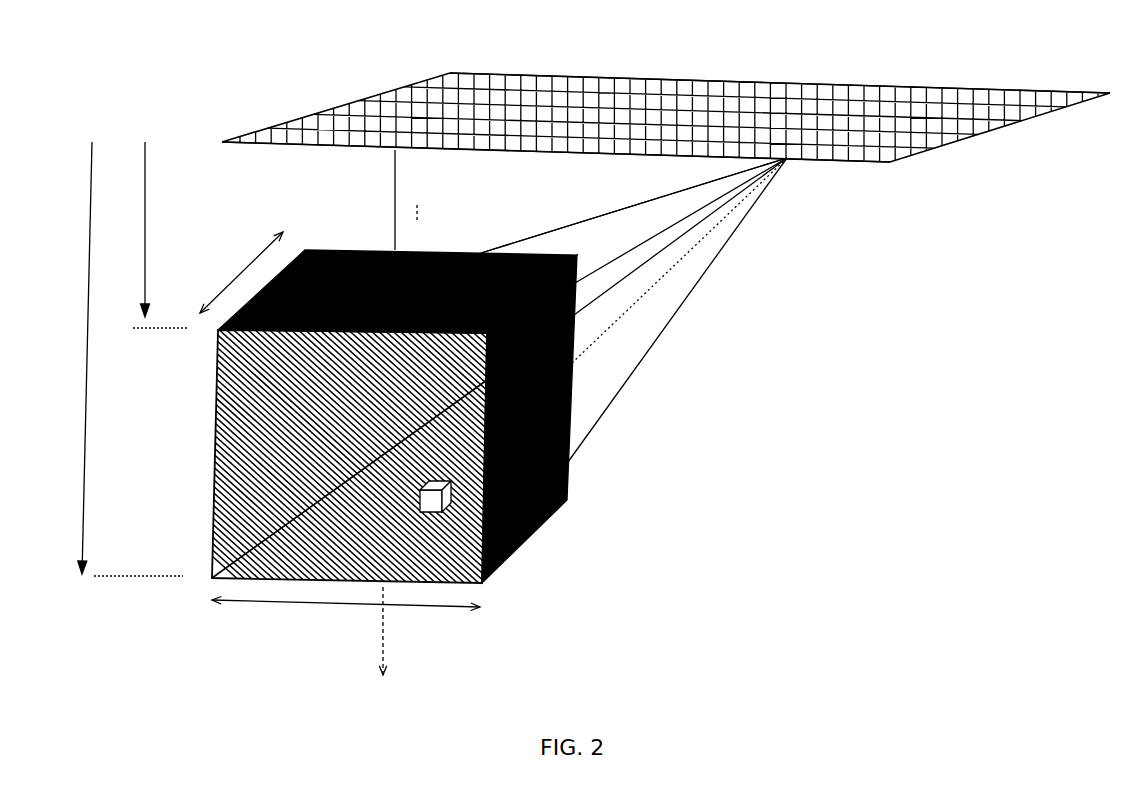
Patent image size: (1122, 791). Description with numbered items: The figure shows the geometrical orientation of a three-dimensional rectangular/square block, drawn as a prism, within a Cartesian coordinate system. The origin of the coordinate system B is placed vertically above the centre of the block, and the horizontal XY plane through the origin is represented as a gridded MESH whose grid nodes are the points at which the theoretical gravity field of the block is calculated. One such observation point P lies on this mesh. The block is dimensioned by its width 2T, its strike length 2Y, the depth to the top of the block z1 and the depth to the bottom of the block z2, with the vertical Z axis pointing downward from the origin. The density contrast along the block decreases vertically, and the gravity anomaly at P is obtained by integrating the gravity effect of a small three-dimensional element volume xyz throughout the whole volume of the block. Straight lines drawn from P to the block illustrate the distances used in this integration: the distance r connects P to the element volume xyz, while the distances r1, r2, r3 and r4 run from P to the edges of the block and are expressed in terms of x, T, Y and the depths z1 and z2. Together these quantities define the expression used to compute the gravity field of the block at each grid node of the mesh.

The mesh MESH is at (878, 120).
The origin of the Cartesian coordinate system B is at (381, 188).
The observation point P is at (645, 196).
The distance r1 is at (634, 205).
The distance r2 is at (681, 220).
The distance r3 is at (677, 310).
The distance r4 is at (680, 236).
The distance to the element volume r is at (679, 260).
The three-dimensional rectangular/square block prism is at (392, 419).
The three-dimensional element volume xyz is at (437, 508).
The strike length of the block 2Y is at (241, 272).
The width of the block 2T is at (346, 615).
The Z axis Z is at (375, 631).
The depth to the top of the block z1 is at (154, 235).
The depth to the bottom of the block z2 is at (122, 359).